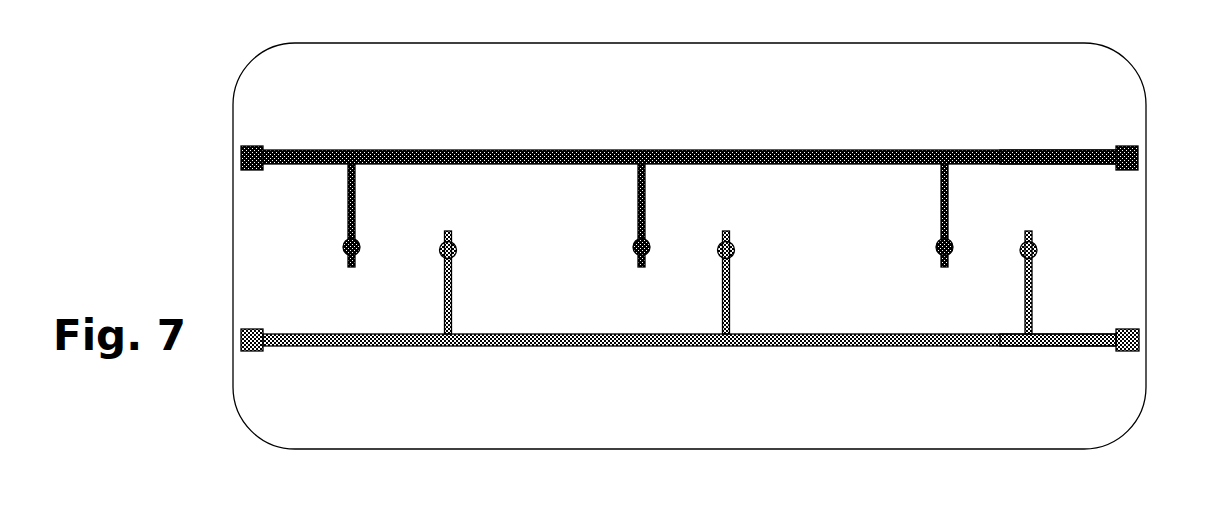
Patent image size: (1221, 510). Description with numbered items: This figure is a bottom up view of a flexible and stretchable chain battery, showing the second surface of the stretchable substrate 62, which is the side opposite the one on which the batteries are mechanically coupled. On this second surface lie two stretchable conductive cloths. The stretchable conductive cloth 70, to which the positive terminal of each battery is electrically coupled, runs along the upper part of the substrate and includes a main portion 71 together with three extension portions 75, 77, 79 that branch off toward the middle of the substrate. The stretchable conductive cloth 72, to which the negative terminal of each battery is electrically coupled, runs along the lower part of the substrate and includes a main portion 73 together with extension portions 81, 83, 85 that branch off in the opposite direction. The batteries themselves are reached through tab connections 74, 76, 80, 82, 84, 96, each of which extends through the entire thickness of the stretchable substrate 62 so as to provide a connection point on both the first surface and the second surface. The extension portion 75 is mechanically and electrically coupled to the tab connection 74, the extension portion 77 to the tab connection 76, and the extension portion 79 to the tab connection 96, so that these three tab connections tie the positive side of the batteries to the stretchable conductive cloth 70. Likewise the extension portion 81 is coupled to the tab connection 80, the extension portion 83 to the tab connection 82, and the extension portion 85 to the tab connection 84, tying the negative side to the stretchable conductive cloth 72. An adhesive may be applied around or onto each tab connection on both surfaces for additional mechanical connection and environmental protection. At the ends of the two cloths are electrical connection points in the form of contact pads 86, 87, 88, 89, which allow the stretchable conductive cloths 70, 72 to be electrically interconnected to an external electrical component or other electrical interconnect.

The stretchable substrate 62 is at (256, 389).
The stretchable conductive cloth 70 is at (1074, 150).
The main portion 71 is at (822, 150).
The stretchable conductive cloth 72 is at (1072, 347).
The main portion 73 is at (926, 347).
The tab connection 74 is at (343, 247).
The extension portion 75 is at (355, 193).
The tab connection 76 is at (633, 247).
The extension portion 77 is at (645, 193).
The extension portion 79 is at (948, 193).
The tab connection 80 is at (457, 250).
The extension portion 81 is at (452, 295).
The tab connection 82 is at (735, 250).
The extension portion 83 is at (730, 295).
The tab connection 84 is at (1037, 250).
The extension portion 85 is at (1032, 295).
The contact pad 86 is at (1127, 146).
The contact pad 87 is at (253, 146).
The contact pad 88 is at (1128, 329).
The contact pad 89 is at (253, 329).
The tab connection 96 is at (936, 247).